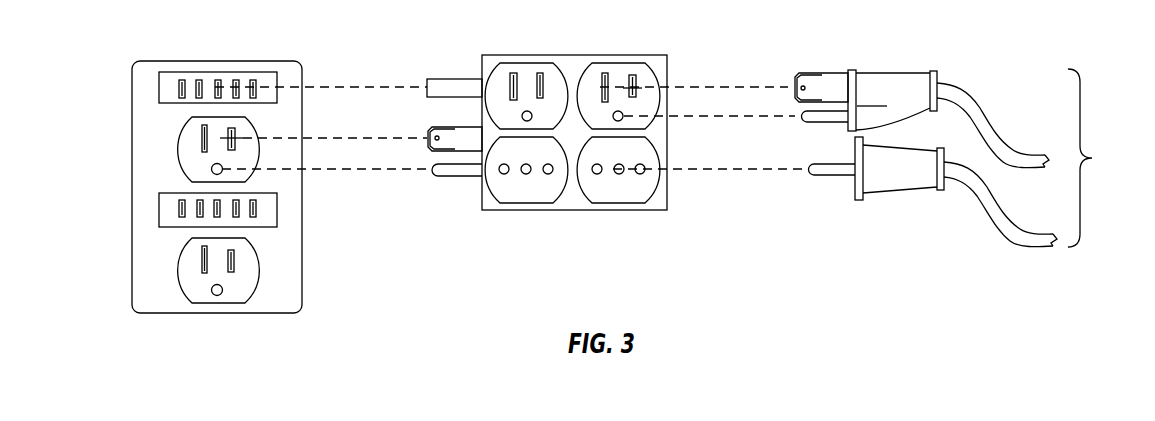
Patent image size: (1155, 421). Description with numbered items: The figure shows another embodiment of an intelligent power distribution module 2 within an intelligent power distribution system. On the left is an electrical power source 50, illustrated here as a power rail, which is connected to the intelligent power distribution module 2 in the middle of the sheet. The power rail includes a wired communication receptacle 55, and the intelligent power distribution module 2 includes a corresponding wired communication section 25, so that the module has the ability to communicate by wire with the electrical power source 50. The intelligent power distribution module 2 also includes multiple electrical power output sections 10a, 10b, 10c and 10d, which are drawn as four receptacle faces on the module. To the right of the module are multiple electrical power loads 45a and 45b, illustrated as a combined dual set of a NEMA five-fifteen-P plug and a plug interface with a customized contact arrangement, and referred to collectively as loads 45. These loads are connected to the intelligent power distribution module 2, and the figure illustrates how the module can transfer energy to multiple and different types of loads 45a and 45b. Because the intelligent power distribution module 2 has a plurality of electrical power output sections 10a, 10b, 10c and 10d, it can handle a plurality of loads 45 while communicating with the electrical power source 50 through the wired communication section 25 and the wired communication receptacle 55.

The intelligent power distribution module 2 is at (476, 30).
The electrical power output section 10a is at (527, 63).
The electrical power output section 10b is at (618, 63).
The electrical power output section 10c is at (526, 203).
The electrical power output section 10d is at (617, 203).
The wired communication section 25 is at (455, 78).
The electrical power loads 45 is at (960, 144).
The electrical power load 45a is at (933, 70).
The electrical power load 45b is at (900, 190).
The electrical power source 50 is at (160, 60).
The wired communication receptacle 55 is at (159, 87).